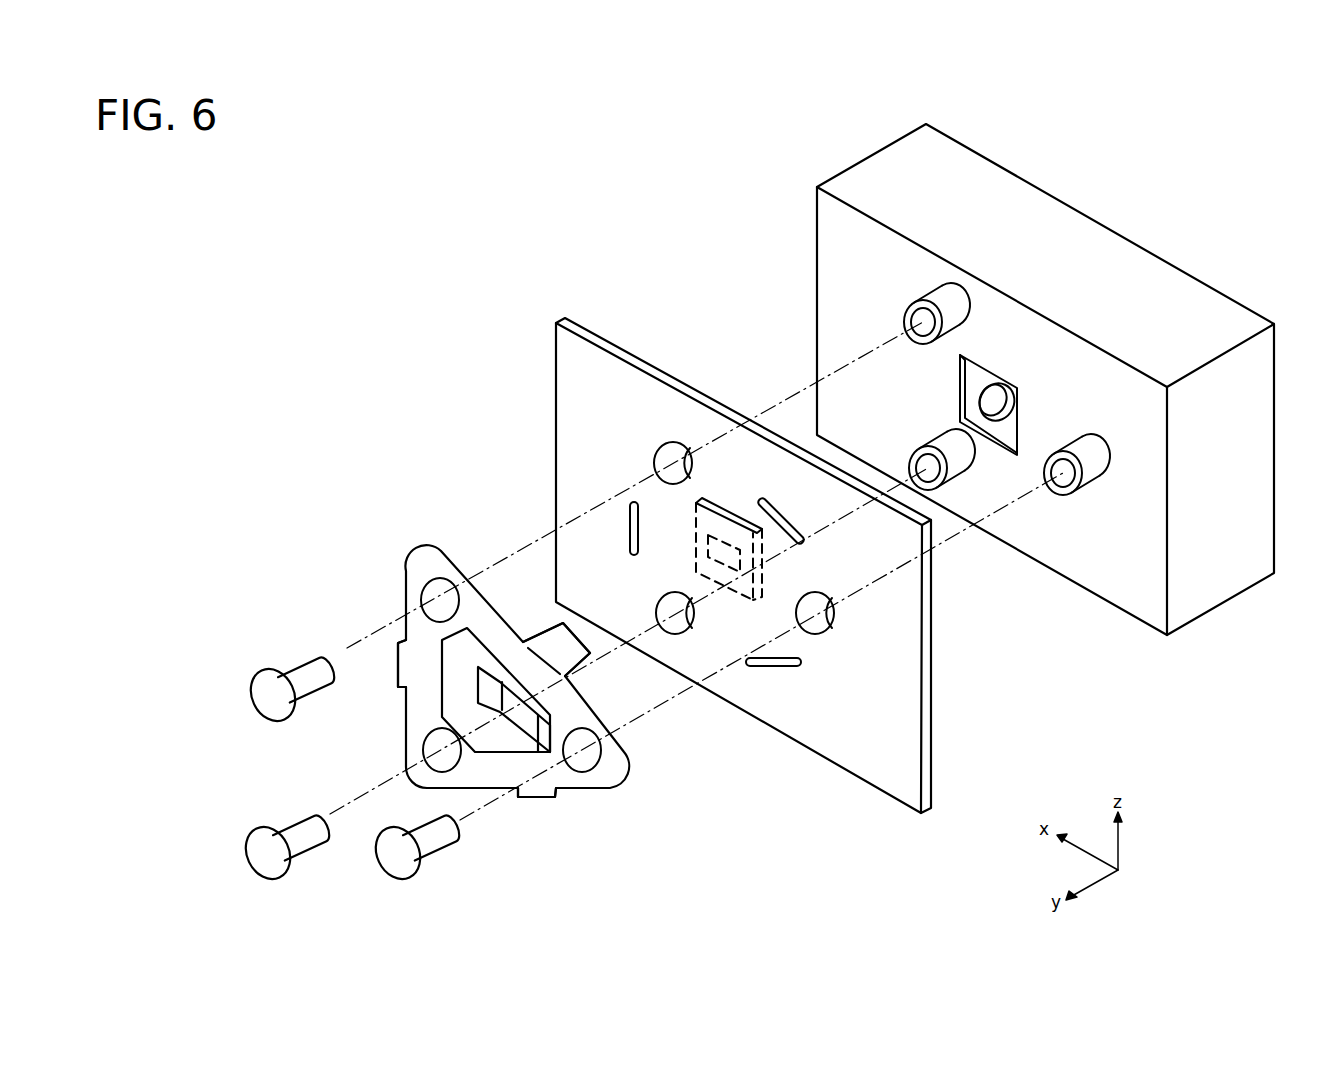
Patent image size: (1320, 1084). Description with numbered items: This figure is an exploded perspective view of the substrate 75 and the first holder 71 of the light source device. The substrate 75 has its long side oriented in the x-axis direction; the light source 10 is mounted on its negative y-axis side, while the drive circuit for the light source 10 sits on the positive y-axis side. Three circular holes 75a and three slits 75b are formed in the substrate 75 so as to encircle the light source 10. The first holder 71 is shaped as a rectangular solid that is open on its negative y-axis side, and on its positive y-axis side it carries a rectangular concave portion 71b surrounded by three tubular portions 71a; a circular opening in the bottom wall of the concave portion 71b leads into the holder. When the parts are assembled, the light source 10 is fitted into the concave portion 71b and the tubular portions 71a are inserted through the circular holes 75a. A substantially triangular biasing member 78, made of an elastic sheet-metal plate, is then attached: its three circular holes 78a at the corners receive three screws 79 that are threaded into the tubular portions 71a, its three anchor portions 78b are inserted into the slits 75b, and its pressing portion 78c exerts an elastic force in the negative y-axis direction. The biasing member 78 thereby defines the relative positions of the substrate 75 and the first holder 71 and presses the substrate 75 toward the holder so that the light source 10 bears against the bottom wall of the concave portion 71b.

The light source 10 is at (724, 502).
The first holder 71 is at (894, 160).
The tubular portions 71a is at (965, 321).
The concave portion 71b is at (963, 400).
The substrate 75 is at (559, 322).
The circular holes 75a is at (660, 456).
The slits 75b is at (632, 556).
The biasing member 78 is at (422, 553).
The circular holes 78a is at (425, 592).
The anchor portions 78b is at (402, 641).
The pressing portion 78c is at (522, 726).
The screws 79 is at (262, 706).